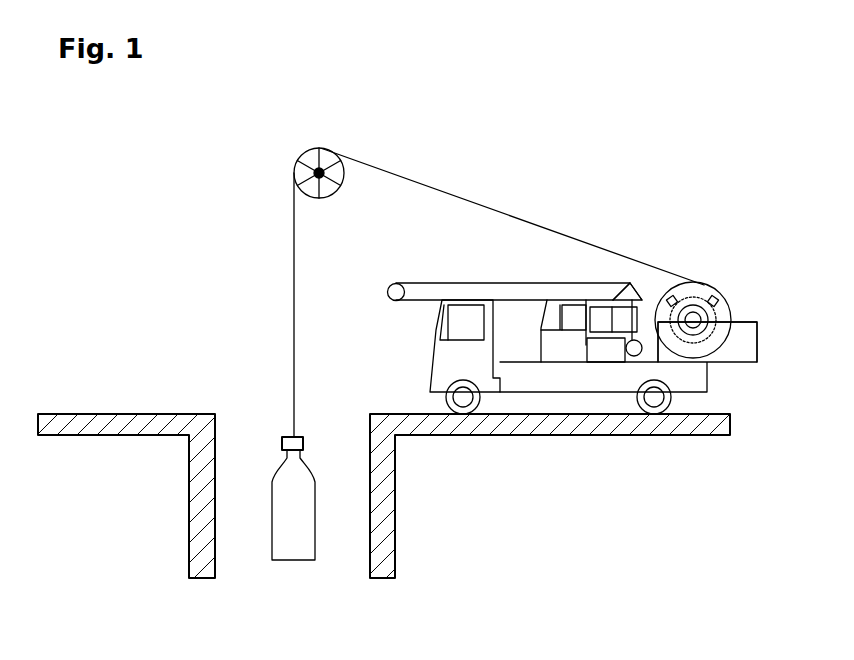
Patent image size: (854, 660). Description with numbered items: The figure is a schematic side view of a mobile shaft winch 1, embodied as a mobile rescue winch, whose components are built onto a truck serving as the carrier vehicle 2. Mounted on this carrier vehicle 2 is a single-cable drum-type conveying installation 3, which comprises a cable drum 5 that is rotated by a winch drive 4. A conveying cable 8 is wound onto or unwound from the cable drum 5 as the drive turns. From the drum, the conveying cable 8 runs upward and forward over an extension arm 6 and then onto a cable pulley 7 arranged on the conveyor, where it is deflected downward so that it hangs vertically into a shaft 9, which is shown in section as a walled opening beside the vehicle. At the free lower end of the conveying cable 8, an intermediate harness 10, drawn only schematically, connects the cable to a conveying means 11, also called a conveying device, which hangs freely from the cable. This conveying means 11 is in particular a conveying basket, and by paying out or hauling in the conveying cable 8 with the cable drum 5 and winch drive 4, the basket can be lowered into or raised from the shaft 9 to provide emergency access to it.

The mobile shaft winch 1 is at (555, 166).
The carrier vehicle 2 is at (587, 380).
The single-cable drum-type conveying installation 3 is at (698, 268).
The winch drive 4 is at (628, 290).
The cable drum 5 is at (737, 290).
The extension arm 6 is at (450, 292).
The cable pulley 7 is at (313, 155).
The conveying cable 8 is at (296, 297).
The shaft 9 is at (382, 527).
The intermediate harness 10 is at (306, 444).
The conveying means 11 is at (291, 545).